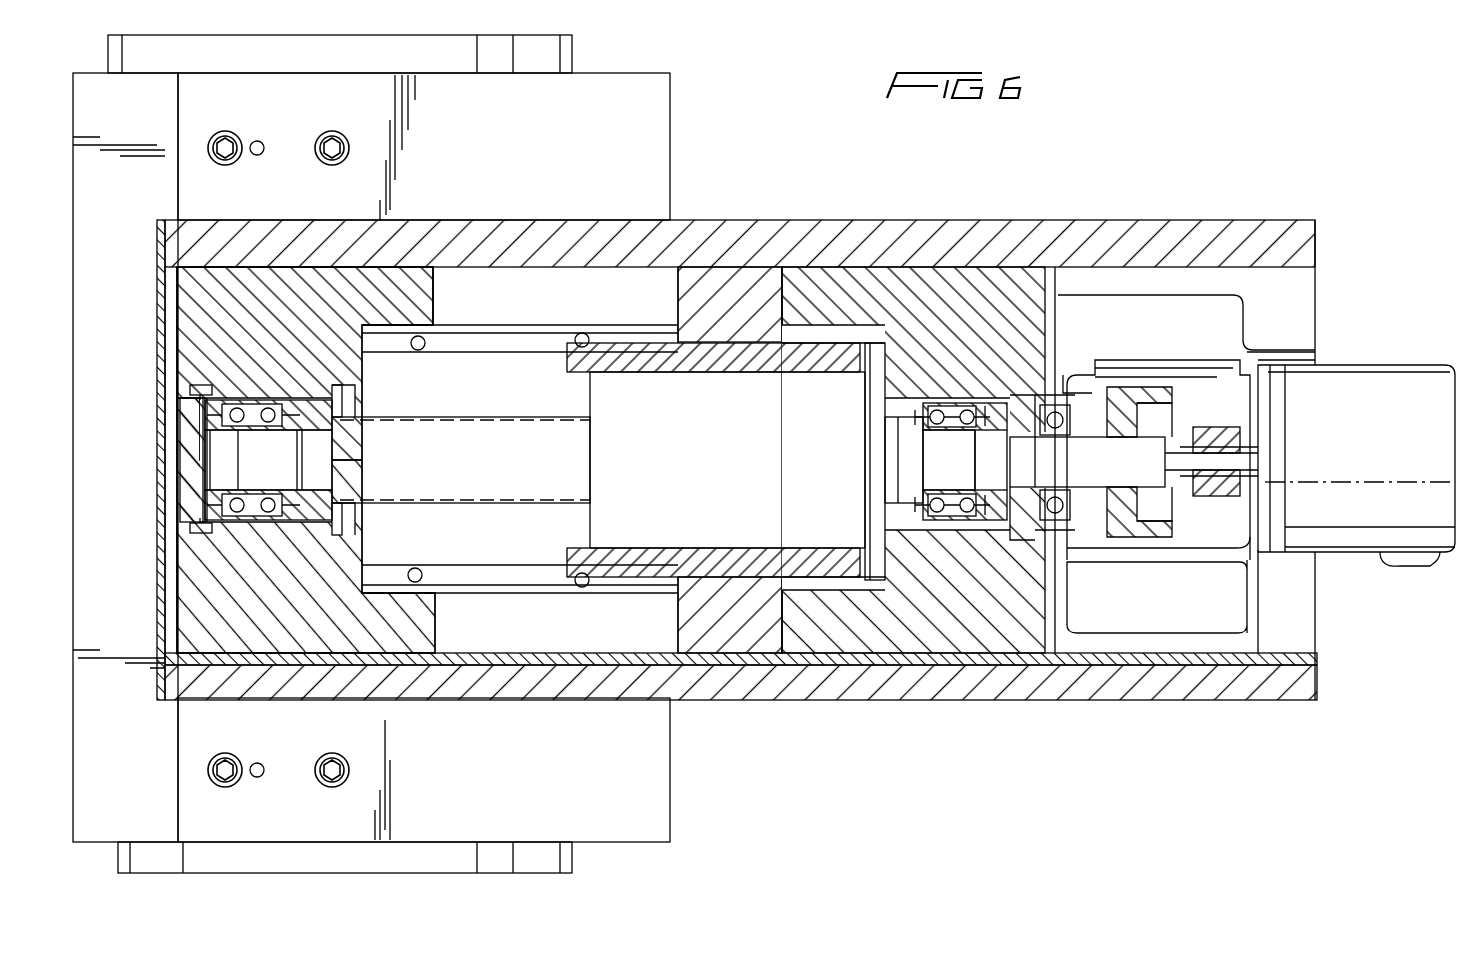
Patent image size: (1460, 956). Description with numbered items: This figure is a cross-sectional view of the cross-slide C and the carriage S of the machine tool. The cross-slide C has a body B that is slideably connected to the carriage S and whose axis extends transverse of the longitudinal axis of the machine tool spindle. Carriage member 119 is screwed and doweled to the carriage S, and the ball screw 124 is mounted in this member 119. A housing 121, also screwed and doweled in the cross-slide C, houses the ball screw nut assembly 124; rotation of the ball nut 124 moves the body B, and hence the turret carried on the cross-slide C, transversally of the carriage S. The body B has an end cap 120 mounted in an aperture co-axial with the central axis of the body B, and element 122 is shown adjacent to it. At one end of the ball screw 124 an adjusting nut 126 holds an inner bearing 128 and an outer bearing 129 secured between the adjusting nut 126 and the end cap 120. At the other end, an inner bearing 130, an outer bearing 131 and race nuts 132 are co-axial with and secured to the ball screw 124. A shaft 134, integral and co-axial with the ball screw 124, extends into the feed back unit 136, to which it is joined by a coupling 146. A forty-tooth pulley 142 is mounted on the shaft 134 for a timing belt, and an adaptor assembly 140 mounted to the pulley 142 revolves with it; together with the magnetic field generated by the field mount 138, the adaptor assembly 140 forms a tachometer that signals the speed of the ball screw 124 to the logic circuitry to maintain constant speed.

The carriage member 119 is at (350, 618).
The end cap 120 is at (185, 488).
The housing 121 is at (685, 617).
The key 122 is at (190, 530).
The ball screw 124 is at (742, 482).
The adjusting nut 126 is at (362, 515).
The inner bearing 128 is at (300, 492).
The outer bearing 129 is at (262, 492).
The inner bearing 130 is at (937, 512).
The outer bearing 131 is at (967, 512).
The race nuts 132 is at (1017, 430).
The shaft 134 is at (966, 482).
The feed back unit 136 is at (1368, 482).
The field mount 138 is at (1052, 548).
The adaptor assembly 140 is at (1060, 498).
The pulley 142 is at (1142, 535).
The coupling 146 is at (1217, 496).
The cross-slide C is at (825, 703).
The body B is at (1222, 700).
The carriage S is at (655, 838).